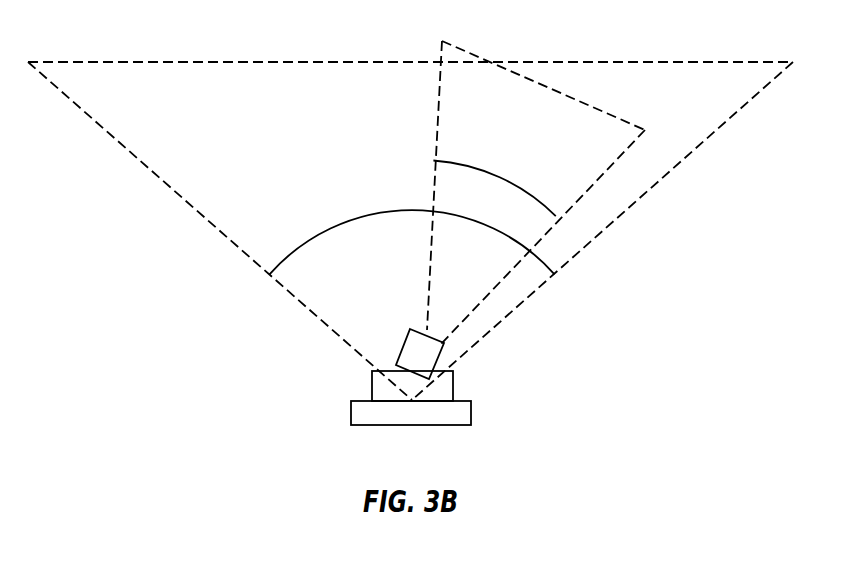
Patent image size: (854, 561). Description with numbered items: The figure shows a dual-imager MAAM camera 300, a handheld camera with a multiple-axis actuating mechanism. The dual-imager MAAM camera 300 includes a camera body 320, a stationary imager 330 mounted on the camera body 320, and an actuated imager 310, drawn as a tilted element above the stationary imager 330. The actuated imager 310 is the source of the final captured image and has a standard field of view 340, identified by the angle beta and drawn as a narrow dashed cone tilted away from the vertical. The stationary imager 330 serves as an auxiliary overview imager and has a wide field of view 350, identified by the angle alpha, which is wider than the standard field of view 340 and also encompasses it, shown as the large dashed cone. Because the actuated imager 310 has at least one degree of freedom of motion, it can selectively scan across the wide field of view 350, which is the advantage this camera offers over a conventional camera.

The dual-imager MAAM camera 300 is at (487, 353).
The actuated imager 310 is at (423, 329).
The camera body 320 is at (351, 413).
The stationary imager 330 is at (372, 379).
The standard field of view 340 is at (512, 145).
The wide field of view 350 is at (380, 187).